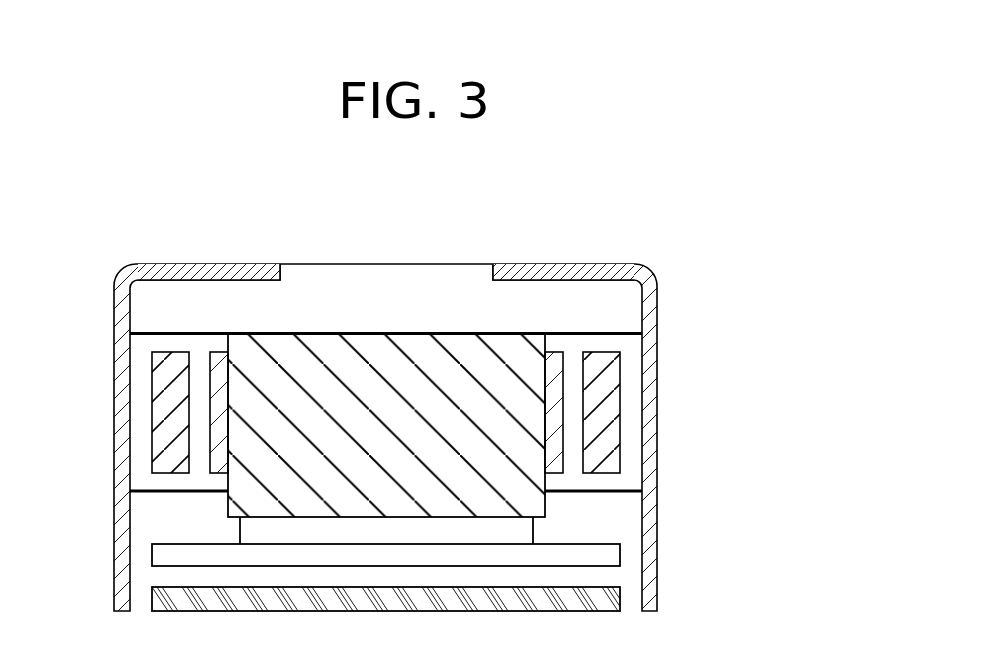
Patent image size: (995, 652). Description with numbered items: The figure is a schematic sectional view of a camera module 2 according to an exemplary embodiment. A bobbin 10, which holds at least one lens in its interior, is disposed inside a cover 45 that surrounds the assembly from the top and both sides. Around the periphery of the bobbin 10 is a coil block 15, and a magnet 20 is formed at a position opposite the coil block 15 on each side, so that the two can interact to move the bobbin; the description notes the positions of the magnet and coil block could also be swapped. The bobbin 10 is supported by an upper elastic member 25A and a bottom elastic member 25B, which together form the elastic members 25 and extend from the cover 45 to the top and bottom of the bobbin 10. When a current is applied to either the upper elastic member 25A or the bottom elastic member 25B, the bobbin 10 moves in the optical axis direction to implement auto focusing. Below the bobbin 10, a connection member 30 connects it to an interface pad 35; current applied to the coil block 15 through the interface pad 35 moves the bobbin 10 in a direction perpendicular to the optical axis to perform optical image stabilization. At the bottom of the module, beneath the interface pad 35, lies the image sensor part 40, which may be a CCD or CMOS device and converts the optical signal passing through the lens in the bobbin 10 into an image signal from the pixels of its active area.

The camera module 2 is at (624, 227).
The bobbin 10 is at (428, 333).
The coil block 15 is at (218, 385).
The magnet 20 is at (172, 418).
The elastic members 25 is at (741, 312).
The upper elastic member 25A is at (617, 333).
The bottom elastic member 25B is at (622, 489).
The connection member 30 is at (533, 529).
The interface pad 35 is at (603, 557).
The image sensor part 40 is at (603, 602).
The cover 45 is at (121, 303).